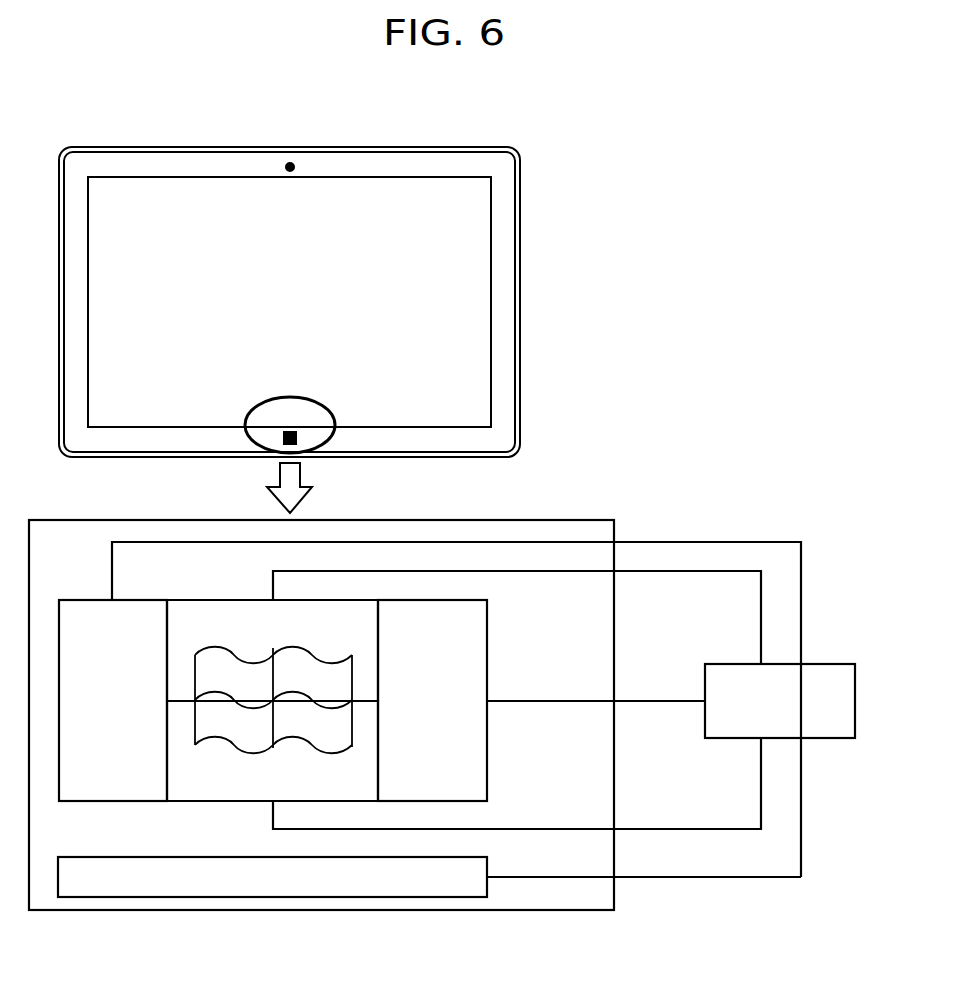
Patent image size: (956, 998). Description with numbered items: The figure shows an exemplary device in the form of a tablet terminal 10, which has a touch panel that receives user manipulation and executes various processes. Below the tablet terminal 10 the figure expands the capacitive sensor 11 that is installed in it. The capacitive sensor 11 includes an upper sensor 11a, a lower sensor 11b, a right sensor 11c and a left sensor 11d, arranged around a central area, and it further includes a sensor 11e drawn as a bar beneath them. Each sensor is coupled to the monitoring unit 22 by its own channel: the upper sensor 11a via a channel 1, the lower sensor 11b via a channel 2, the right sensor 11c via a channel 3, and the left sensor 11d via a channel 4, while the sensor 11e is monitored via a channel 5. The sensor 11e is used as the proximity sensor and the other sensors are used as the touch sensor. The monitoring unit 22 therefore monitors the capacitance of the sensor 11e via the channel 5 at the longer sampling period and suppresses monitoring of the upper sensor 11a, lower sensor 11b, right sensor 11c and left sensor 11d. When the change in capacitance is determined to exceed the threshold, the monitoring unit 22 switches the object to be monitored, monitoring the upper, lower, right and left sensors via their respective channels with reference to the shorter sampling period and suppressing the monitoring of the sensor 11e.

The tablet terminal 10 is at (521, 292).
The capacitive sensor 11 is at (549, 519).
The upper sensor 11a is at (220, 600).
The lower sensor 11b is at (198, 802).
The right sensor 11c is at (488, 633).
The left sensor 11d is at (140, 600).
The sensor 11e is at (488, 867).
The channel 1 is at (680, 572).
The channel 2 is at (680, 829).
The channel 3 is at (680, 701).
The channel 4 is at (680, 542).
The channel 5 is at (680, 878).
The monitoring unit 22 is at (822, 664).